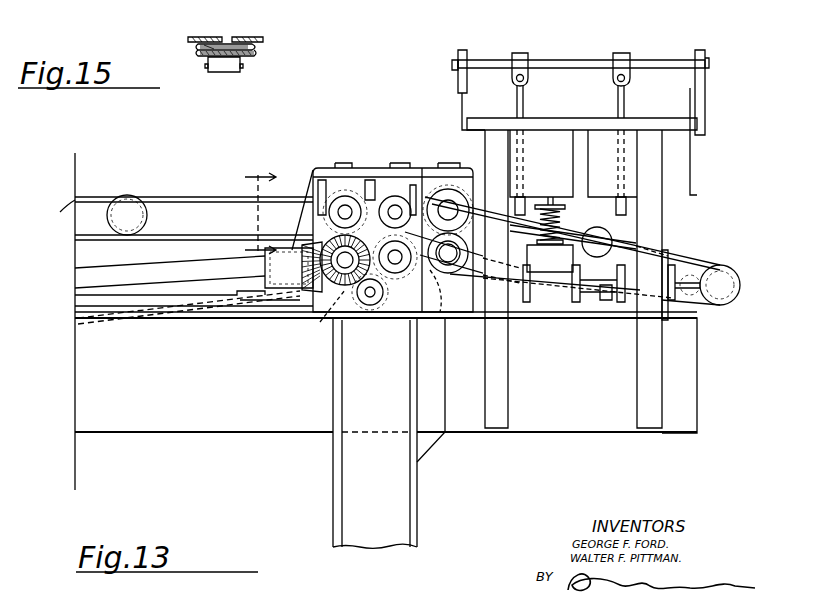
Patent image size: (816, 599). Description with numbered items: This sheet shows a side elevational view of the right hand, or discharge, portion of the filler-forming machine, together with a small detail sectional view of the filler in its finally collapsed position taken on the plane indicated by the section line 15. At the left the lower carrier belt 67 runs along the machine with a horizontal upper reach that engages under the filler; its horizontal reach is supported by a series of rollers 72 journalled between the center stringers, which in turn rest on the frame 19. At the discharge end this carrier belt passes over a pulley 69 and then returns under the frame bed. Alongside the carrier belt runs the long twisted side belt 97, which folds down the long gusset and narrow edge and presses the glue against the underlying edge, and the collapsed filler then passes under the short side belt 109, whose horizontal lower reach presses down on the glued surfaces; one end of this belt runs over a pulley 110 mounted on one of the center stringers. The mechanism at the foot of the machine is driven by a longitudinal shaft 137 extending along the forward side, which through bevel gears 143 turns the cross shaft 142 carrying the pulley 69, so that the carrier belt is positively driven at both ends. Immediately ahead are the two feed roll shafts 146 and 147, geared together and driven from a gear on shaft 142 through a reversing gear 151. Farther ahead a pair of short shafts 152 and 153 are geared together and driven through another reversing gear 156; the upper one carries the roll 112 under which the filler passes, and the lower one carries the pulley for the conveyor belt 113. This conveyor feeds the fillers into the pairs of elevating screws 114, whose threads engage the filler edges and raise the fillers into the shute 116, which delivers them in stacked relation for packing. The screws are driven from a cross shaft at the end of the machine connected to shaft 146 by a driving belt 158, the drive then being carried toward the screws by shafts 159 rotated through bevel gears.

In FIG. 15, the side belt 97 is at (207, 40).
In FIG. 13, the side belt 97 is at (57, 210).
In FIG. 15, the short side belt 109 is at (243, 40).
In FIG. 13, the short side belt 109 is at (205, 186).
In FIG. 15, the carrier belt 67 is at (250, 57).
In FIG. 13, the carrier belt 67 is at (106, 324).
In FIG. 15, the rollers 72 is at (216, 72).
In FIG. 13, the pulley 110 is at (131, 200).
In FIG. 13, the section line 15 is at (260, 215).
In FIG. 13, the shaft 137 is at (122, 258).
In FIG. 13, the frame 19 is at (160, 432).
In FIG. 13, the roll 112 is at (468, 205).
In FIG. 13, the shute 116 is at (700, 88).
In FIG. 13, the cross shaft 143 is at (345, 212).
In FIG. 13, the shaft 146 is at (395, 212).
In FIG. 13, the short shaft 152 is at (448, 210).
In FIG. 13, the cross shaft 142 is at (345, 260).
In FIG. 13, the shaft 147 is at (395, 262).
In FIG. 13, the short shaft 153 is at (452, 275).
In FIG. 13, the reversing gear 151 is at (368, 306).
In FIG. 13, the reversing gear 156 is at (440, 318).
In FIG. 13, the pulley 69 is at (320, 313).
In FIG. 13, the conveyor belt 113 is at (572, 232).
In FIG. 13, the elevating screws 114 is at (560, 186).
In FIG. 13, the shafts 159 is at (611, 302).
In FIG. 13, the driving belt 158 is at (694, 262).